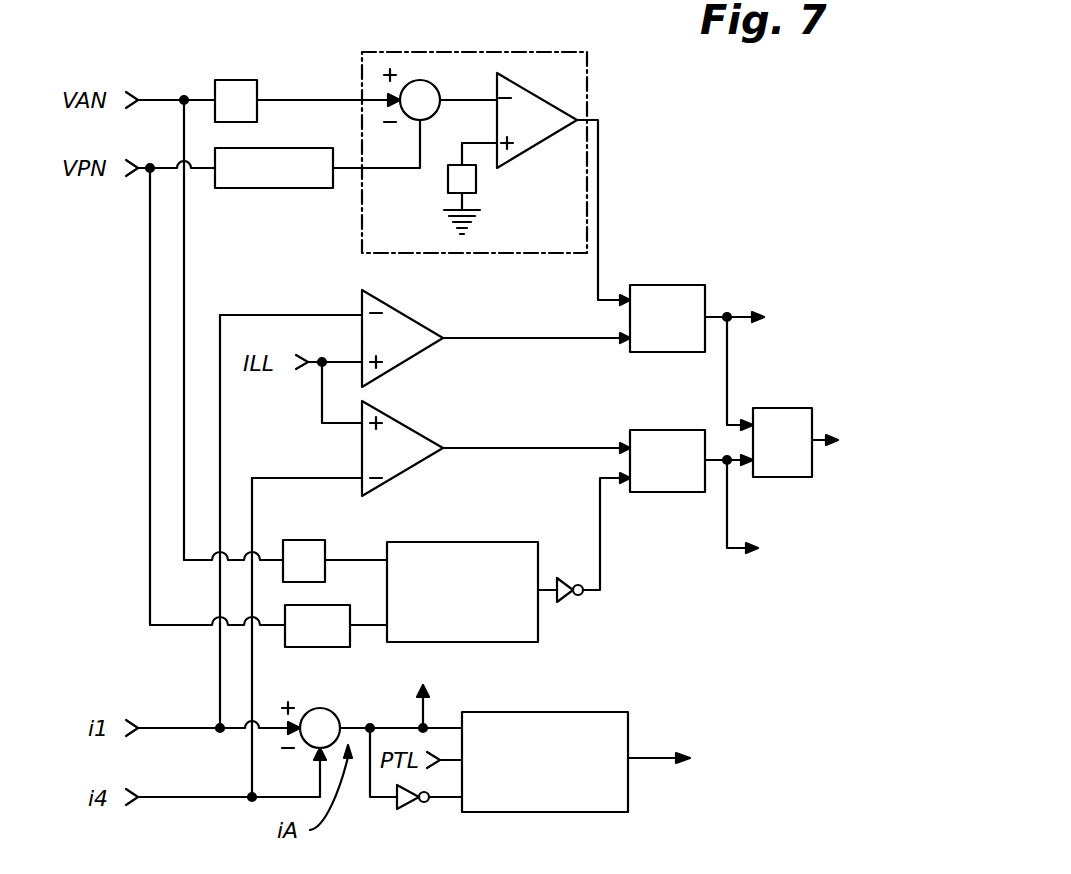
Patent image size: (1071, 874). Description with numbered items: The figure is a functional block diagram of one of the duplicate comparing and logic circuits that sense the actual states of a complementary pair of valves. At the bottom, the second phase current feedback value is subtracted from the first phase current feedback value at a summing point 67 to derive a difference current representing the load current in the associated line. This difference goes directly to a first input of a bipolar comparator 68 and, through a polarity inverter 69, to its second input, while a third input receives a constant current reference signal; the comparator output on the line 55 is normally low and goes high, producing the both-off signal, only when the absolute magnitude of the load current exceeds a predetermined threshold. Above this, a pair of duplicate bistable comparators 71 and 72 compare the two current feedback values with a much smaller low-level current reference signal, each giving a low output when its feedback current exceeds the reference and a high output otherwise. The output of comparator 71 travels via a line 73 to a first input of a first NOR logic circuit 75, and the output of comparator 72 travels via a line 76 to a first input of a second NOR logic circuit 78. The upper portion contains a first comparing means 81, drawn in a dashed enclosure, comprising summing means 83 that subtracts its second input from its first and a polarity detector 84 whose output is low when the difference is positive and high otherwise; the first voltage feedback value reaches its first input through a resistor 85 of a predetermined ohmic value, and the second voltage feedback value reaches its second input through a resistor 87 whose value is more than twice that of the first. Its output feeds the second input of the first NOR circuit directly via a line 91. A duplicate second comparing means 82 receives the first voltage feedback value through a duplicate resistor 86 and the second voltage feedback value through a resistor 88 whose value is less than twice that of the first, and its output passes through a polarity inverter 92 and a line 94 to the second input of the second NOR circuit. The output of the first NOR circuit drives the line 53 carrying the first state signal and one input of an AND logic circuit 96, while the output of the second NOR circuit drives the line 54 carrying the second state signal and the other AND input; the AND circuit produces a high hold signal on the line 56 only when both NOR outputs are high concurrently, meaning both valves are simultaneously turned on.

The first comparing means 81 is at (587, 68).
The summing means 83 is at (436, 88).
The polarity detector 84 is at (527, 150).
The resistor 85 is at (272, 60).
The resistor 87 is at (291, 148).
The line 91 is at (598, 200).
The bistable comparator 71 is at (400, 312).
The bistable comparator 72 is at (405, 428).
The line 73 is at (538, 318).
The line 76 is at (560, 450).
The first NOR logic circuit 75 is at (645, 285).
The second NOR logic circuit 78 is at (655, 430).
The line 53 is at (735, 315).
The line 54 is at (727, 505).
The AND logic circuit 96 is at (812, 385).
The line 56 is at (820, 440).
The resistor 86 is at (318, 540).
The resistor 88 is at (313, 647).
The second comparing means 82 is at (462, 542).
The polarity inverter 92 is at (590, 540).
The line 94 is at (600, 570).
The summing point 67 is at (336, 714).
The bipolar comparator 68 is at (560, 712).
The line 55 is at (650, 757).
The polarity inverter 69 is at (400, 810).